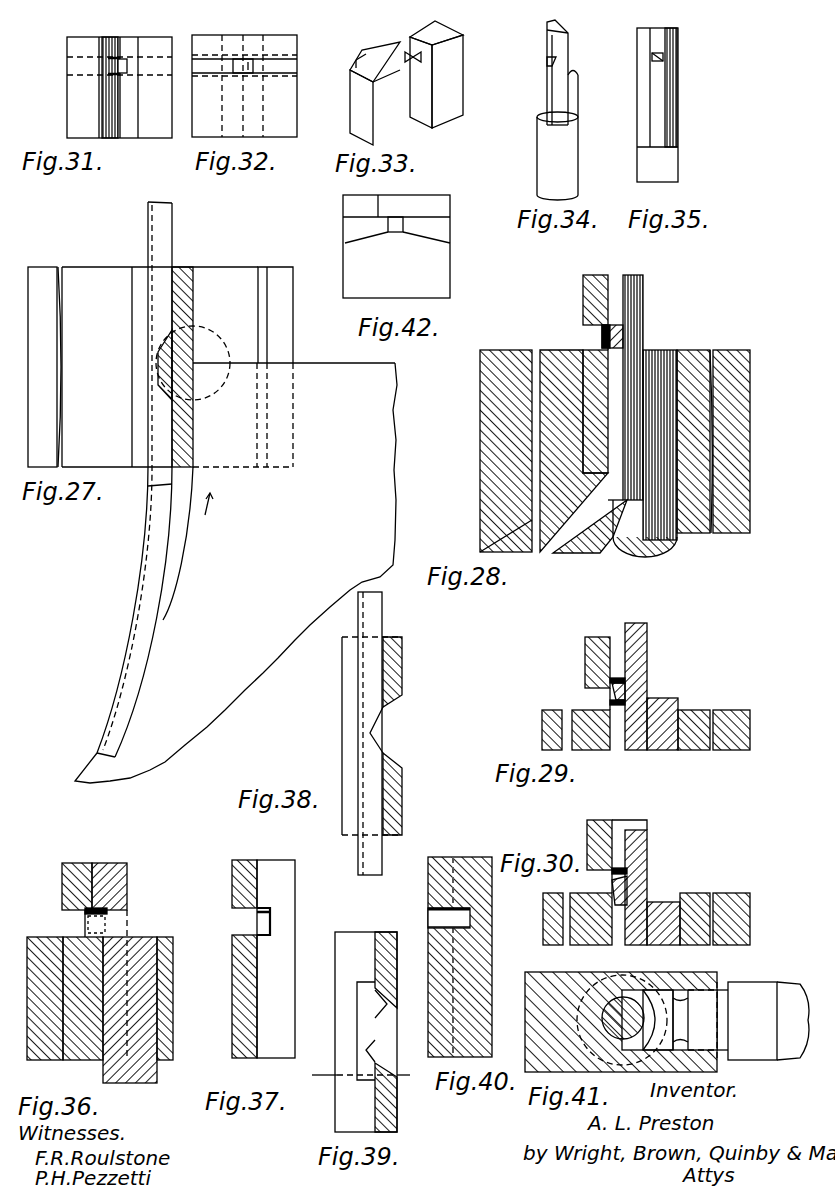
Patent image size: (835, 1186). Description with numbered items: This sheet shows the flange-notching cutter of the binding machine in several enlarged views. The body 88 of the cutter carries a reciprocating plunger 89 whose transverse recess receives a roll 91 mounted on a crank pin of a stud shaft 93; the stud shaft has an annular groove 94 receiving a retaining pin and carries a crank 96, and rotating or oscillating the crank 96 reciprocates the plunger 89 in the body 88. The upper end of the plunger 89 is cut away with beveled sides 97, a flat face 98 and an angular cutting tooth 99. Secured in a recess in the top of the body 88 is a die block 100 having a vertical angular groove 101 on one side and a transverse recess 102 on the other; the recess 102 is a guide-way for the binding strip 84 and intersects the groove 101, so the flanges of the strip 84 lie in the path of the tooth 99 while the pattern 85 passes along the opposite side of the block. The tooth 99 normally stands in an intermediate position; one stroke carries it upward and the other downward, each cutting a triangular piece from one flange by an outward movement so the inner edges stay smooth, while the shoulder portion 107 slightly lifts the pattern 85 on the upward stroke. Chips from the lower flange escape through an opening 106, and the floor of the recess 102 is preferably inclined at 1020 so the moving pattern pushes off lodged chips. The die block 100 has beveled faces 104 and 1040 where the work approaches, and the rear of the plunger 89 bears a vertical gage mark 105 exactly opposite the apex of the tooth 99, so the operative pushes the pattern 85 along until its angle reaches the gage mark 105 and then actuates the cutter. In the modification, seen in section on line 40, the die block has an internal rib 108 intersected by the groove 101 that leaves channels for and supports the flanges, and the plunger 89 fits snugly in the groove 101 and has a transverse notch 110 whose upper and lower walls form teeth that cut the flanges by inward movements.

In FIG. 39, the section line 40 is at (361, 1076).
In FIG. 27, the binding strip 84 is at (150, 562).
In FIG. 28, the binding strip 84 is at (604, 340).
In FIG. 29, the binding strip 84 is at (607, 697).
In FIG. 30, the binding strip 84 is at (610, 893).
In FIG. 38, the binding strip 84 is at (370, 690).
In FIG. 36, the binding strip 84 is at (88, 921).
In FIG. 27, the pattern 85 is at (212, 525).
In FIG. 28, the body 88 is at (762, 396).
In FIG. 29, the body 88 is at (730, 713).
In FIG. 30, the body 88 is at (723, 893).
In FIG. 36, the body 88 is at (40, 930).
In FIG. 41, the body 88 is at (607, 1022).
In FIG. 34, the plunger 89 is at (570, 155).
In FIG. 35, the plunger 89 is at (668, 165).
In FIG. 27, the plunger 89 is at (193, 373).
In FIG. 28, the plunger 89 is at (646, 282).
In FIG. 29, the plunger 89 is at (648, 653).
In FIG. 30, the plunger 89 is at (648, 863).
In FIG. 36, the plunger 89 is at (120, 874).
In FIG. 41, the plunger 89 is at (626, 1000).
In FIG. 41, the roll 91 is at (664, 992).
In FIG. 41, the stud shaft 93 is at (728, 984).
In FIG. 41, the annular groove 94 is at (684, 1023).
In FIG. 41, the crank 96 is at (765, 995).
In FIG. 34, the beveled sides 97 is at (570, 50).
In FIG. 35, the beveled sides 97 is at (650, 88).
In FIG. 27, the beveled sides 97 is at (180, 328).
In FIG. 28, the beveled sides 97 is at (640, 302).
In FIG. 34, the flat face 98 is at (548, 38).
In FIG. 34, the cutting tooth 99 is at (549, 62).
In FIG. 35, the cutting tooth 99 is at (668, 58).
In FIG. 27, the cutting tooth 99 is at (158, 368).
In FIG. 28, the cutting tooth 99 is at (620, 335).
In FIG. 29, the cutting tooth 99 is at (622, 683).
In FIG. 30, the cutting tooth 99 is at (647, 893).
In FIG. 31, the die block 100 is at (157, 124).
In FIG. 33, the die block 100 is at (447, 70).
In FIG. 27, the die block 100 is at (190, 282).
In FIG. 28, the die block 100 is at (588, 398).
In FIG. 38, the die block 100 is at (396, 670).
In FIG. 36, the die block 100 is at (72, 872).
In FIG. 37, the die block 100 is at (253, 862).
In FIG. 39, the die block 100 is at (382, 932).
In FIG. 40, the die block 100 is at (376, 906).
In FIG. 31, the vertical angular groove 101 is at (130, 128).
In FIG. 32, the vertical angular groove 101 is at (258, 118).
In FIG. 33, the vertical angular groove 101 is at (420, 114).
In FIG. 28, the vertical angular groove 101 is at (617, 447).
In FIG. 38, the vertical angular groove 101 is at (390, 748).
In FIG. 37, the vertical angular groove 101 is at (275, 985).
In FIG. 39, the vertical angular groove 101 is at (367, 1036).
In FIG. 40, the vertical angular groove 101 is at (473, 982).
In FIG. 31, the transverse recess 102 is at (117, 60).
In FIG. 32, the transverse recess 102 is at (253, 66).
In FIG. 33, the transverse recess 102 is at (358, 74).
In FIG. 42, the transverse recess 102 is at (420, 224).
In FIG. 39, the transverse recess 102 is at (348, 952).
In FIG. 33, the beveled face 104 is at (386, 66).
In FIG. 27, the gage mark 105 is at (193, 358).
In FIG. 28, the opening 106 is at (571, 517).
In FIG. 29, the shoulder portion 107 is at (672, 700).
In FIG. 40, the shoulder portion 107 is at (462, 911).
In FIG. 36, the internal rib 108 is at (102, 919).
In FIG. 37, the internal rib 108 is at (264, 923).
In FIG. 39, the internal rib 108 is at (378, 1000).
In FIG. 40, the internal rib 108 is at (458, 913).
In FIG. 36, the transverse notch 110 is at (104, 912).
In FIG. 42, the inclined floor surface 1020 is at (430, 238).
In FIG. 33, the beveled face 1040 is at (400, 42).